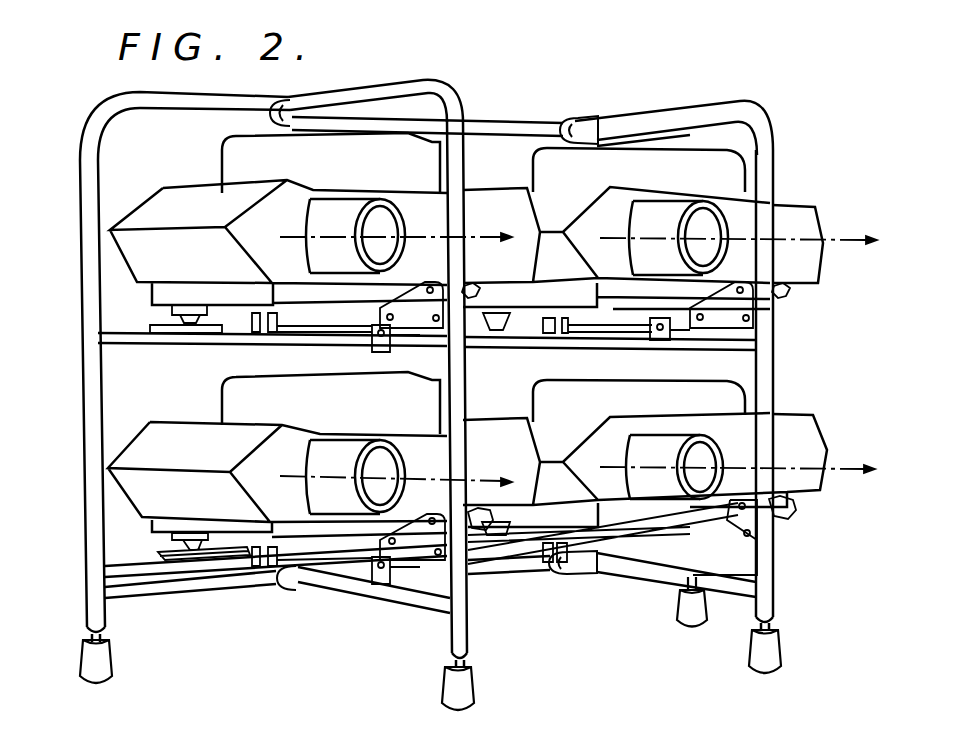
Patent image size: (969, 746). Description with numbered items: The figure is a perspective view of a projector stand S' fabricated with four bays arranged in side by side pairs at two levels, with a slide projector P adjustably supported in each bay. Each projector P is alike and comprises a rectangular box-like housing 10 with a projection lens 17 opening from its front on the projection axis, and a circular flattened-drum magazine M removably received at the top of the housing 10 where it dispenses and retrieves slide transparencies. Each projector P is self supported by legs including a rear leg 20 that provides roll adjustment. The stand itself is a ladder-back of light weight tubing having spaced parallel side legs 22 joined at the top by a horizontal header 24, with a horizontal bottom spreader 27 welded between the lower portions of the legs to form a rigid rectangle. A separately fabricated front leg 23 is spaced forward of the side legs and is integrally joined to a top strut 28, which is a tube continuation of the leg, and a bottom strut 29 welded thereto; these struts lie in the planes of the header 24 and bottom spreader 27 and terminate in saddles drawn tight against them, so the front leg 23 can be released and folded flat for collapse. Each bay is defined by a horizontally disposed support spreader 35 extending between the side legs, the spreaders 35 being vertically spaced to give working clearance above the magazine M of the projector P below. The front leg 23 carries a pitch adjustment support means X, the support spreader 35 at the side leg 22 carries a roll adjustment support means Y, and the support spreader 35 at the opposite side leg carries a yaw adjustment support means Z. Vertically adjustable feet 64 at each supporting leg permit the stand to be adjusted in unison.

The housing 10 is at (467, 358).
The projection lens 17 is at (350, 207).
The rear leg 20 is at (178, 320).
The side leg 22 is at (84, 282).
The front leg 23 is at (461, 632).
The horizontal header 24 is at (504, 126).
The horizontal bottom spreader 27 is at (182, 584).
The top strut 28 is at (365, 94).
The bottom strut 29 is at (369, 596).
The support spreader 35 is at (118, 343).
The vertically adjustable feet 64 is at (108, 664).
The circular magazine M is at (483, 283).
The projector P is at (128, 210).
The stand S' is at (562, 76).
The pitch adjustment support means X is at (446, 338).
The roll adjustment support means Y is at (193, 325).
The yaw adjustment support means Z is at (306, 345).